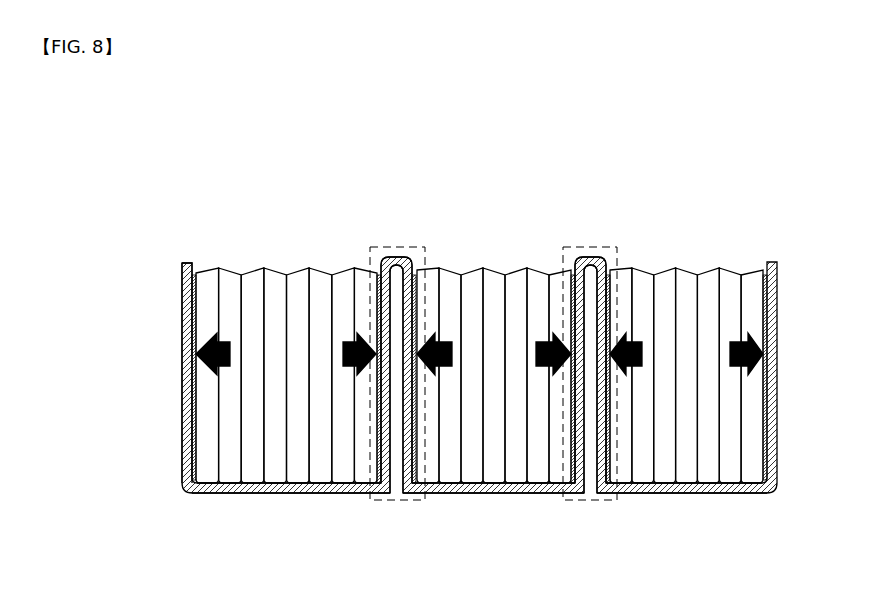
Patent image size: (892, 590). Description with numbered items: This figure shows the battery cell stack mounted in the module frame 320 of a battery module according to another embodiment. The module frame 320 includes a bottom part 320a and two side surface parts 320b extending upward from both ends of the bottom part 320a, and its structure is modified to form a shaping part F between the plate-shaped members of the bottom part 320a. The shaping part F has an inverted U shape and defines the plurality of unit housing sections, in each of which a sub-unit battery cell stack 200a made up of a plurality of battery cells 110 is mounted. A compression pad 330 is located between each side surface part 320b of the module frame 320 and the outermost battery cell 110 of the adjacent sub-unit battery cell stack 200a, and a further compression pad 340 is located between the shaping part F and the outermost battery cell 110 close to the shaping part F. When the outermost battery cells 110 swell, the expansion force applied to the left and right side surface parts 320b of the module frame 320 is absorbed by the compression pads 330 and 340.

The module frame 320 is at (474, 111).
The bottom part 320a is at (242, 493).
The side surface part 320b is at (185, 263).
The compression pad 330 is at (192, 303).
The compression pad 340 is at (381, 290).
The sub-unit battery cell stack 200a is at (479, 330).
The battery cell 110 is at (318, 277).
The shaping part F is at (397, 247).